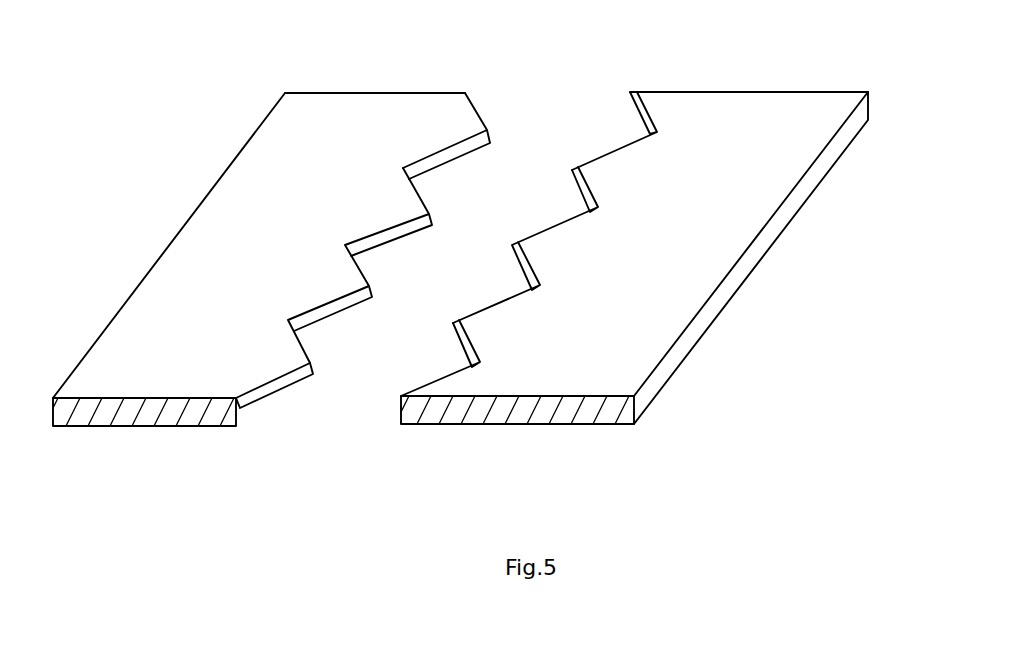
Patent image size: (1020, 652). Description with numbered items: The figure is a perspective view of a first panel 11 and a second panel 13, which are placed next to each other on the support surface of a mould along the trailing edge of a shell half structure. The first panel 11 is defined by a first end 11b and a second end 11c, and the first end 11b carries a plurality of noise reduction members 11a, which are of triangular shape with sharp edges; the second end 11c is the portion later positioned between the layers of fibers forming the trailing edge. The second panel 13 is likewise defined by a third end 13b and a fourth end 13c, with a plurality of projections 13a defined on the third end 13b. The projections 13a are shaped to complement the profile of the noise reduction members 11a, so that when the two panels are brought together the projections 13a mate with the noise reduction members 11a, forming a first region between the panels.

The first panel 11 is at (225, 290).
The noise reduction members 11a is at (460, 125).
The first end 11b is at (268, 385).
The second end 11c is at (140, 283).
The second panel 13 is at (708, 175).
The projections 13a is at (608, 170).
The third end 13b is at (420, 385).
The fourth end 13c is at (785, 207).